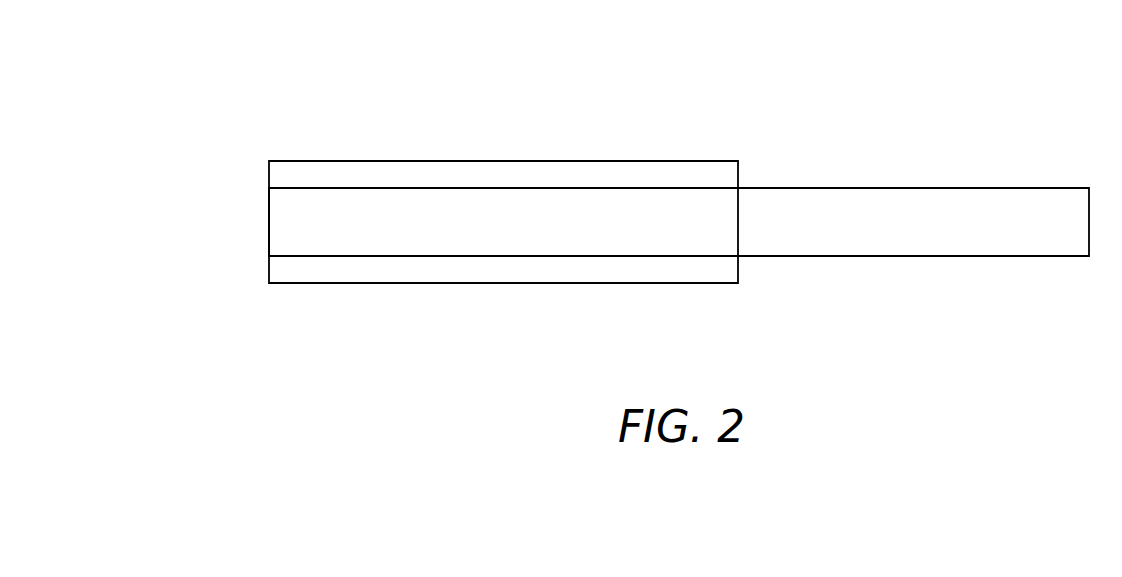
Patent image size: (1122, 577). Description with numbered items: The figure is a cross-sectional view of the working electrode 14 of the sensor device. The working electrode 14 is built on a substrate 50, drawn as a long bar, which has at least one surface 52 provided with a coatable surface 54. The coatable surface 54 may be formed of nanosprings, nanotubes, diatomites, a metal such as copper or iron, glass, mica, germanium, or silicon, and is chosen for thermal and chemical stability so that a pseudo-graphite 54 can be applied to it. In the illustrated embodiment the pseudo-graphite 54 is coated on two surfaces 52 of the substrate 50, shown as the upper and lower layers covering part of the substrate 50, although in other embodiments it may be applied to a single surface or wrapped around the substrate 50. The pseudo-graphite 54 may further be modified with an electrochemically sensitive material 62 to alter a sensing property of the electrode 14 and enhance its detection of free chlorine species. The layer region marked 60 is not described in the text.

The working electrode 14 is at (193, 135).
The substrate 50 is at (888, 238).
The surface 52 is at (280, 235).
The coatable surface 54 is at (323, 187).
The first portion of coating 60 is at (392, 177).
The electrochemically sensitive material 62 is at (588, 177).